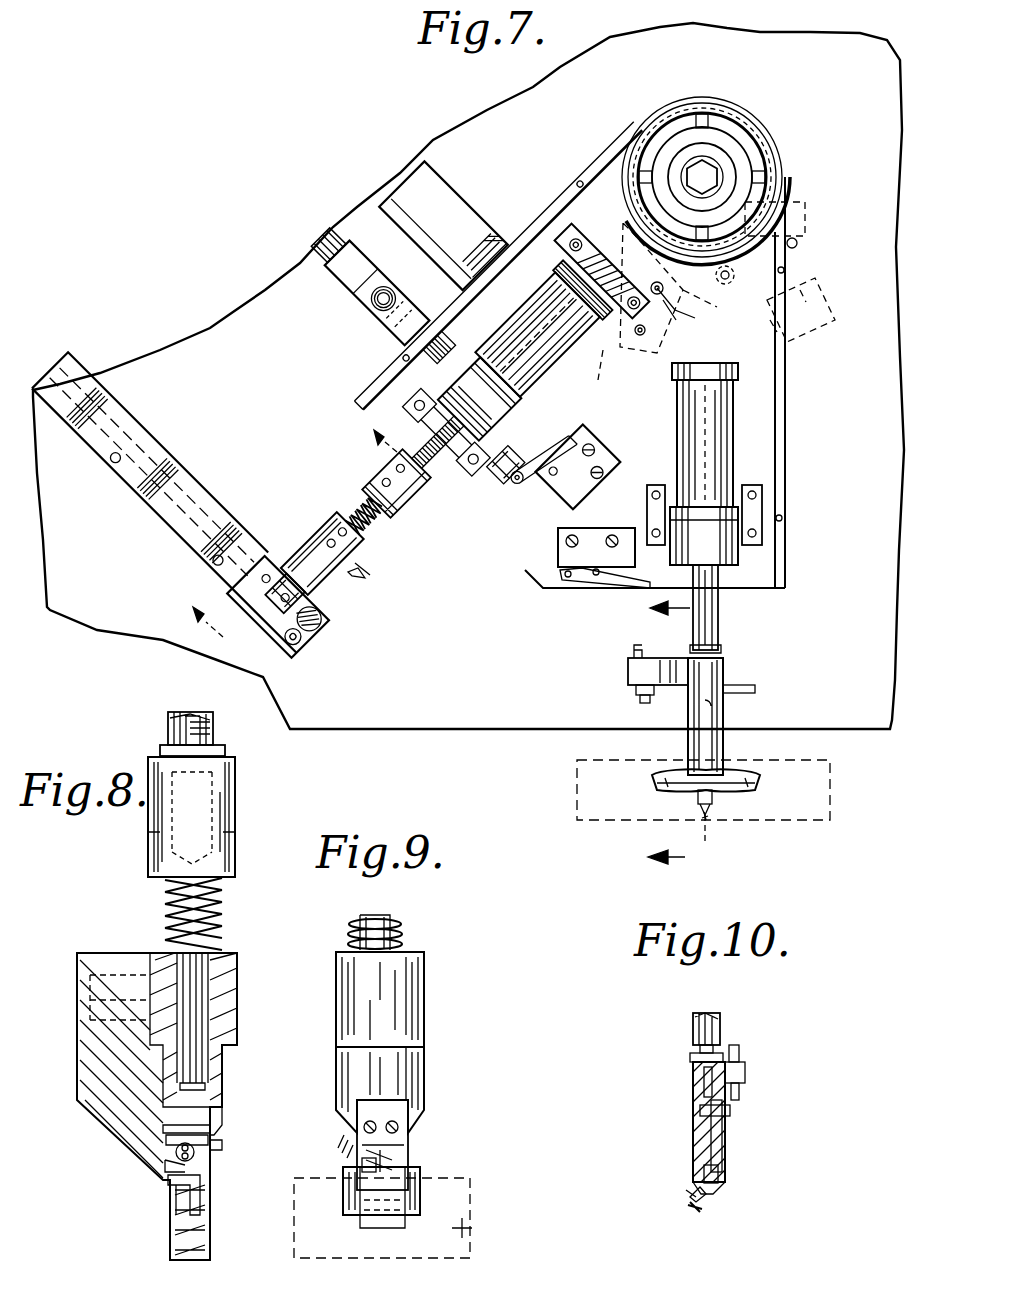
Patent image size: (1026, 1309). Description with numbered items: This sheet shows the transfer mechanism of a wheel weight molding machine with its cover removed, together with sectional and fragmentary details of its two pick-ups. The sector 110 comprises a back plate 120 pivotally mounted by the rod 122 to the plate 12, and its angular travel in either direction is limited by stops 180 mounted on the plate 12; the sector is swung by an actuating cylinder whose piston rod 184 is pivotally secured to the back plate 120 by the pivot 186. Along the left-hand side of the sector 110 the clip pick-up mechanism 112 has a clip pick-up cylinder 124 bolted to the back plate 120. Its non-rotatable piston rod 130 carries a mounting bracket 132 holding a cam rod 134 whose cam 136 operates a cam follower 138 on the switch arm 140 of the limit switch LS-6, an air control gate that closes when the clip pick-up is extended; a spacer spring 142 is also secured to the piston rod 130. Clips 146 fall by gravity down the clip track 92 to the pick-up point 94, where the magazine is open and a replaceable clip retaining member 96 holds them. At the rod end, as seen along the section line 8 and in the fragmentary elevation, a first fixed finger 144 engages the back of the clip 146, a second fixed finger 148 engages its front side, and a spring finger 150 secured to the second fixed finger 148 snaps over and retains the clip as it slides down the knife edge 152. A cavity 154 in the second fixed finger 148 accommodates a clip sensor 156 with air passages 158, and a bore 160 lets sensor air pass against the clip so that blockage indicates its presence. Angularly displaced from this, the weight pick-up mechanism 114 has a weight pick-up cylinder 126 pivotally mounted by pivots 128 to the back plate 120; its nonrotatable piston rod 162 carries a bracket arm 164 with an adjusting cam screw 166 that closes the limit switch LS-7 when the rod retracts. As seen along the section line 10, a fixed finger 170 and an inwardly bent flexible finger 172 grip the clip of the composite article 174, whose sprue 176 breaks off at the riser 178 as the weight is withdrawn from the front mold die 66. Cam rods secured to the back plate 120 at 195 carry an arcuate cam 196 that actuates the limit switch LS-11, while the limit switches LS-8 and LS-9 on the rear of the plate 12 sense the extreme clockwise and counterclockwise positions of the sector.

In FIG. 7, the plate 12 is at (200, 360).
In FIG. 7, the supply magazine or clip track 92 is at (150, 470).
In FIG. 7, the pick-up point 94 is at (300, 605).
In FIG. 7, the clip retaining member 96 is at (292, 650).
In FIG. 7, the clip pick-up mechanism 112 is at (338, 585).
In FIG. 9, the clip pick-up mechanism 112 is at (440, 1090).
In FIG. 7, the clips 146 is at (275, 588).
In FIG. 8, the clips 146 is at (168, 1200).
In FIG. 9, the clips 146 is at (422, 1196).
In FIG. 10, the clips 146 is at (722, 1168).
In FIG. 7, the spacer spring 142 is at (352, 515).
In FIG. 8, the spacer spring 142 is at (222, 912).
In FIG. 9, the spacer spring 142 is at (400, 928).
In FIG. 7, the mounting bracket 132 is at (405, 512).
In FIG. 7, the cam rod 134 is at (480, 510).
In FIG. 7, the cam 136 is at (508, 460).
In FIG. 7, the cam follower 138 is at (515, 490).
In FIG. 7, the switch arm 140 is at (555, 445).
In FIG. 7, the clip pick-up cylinder 124 is at (535, 335).
In FIG. 7, the piston rod 130 is at (375, 400).
In FIG. 7, the stops 180 is at (455, 228).
In FIG. 7, the pivot 186 is at (372, 310).
In FIG. 7, the piston rod 184 is at (318, 250).
In FIG. 7, the limit switch LS-8 is at (641, 308).
In FIG. 7, the limit switch LS-6 is at (600, 438).
In FIG. 7, the limit switch LS-7 is at (632, 533).
In FIG. 7, the limit switch LS-9 is at (822, 338).
In FIG. 7, the limit switch LS-11 is at (805, 222).
In FIG. 7, the back plate 120 is at (615, 185).
In FIG. 7, the rod 122 is at (710, 176).
In FIG. 7, the arcuate cam 196 is at (707, 300).
In FIG. 7, the cam rod mounting 195 is at (660, 320).
In FIG. 7, the weight pick-up cylinder 126 is at (705, 420).
In FIG. 7, the pivots 128 is at (700, 515).
In FIG. 7, the sector 110 is at (830, 496).
In FIG. 7, the piston rod 162 is at (712, 625).
In FIG. 10, the piston rod 162 is at (692, 1028).
In FIG. 7, the fixed finger 170 is at (724, 664).
In FIG. 10, the fixed finger 170 is at (693, 1103).
In FIG. 7, the weight pick-up mechanism 114 is at (740, 715).
In FIG. 10, the weight pick-up mechanism 114 is at (738, 1117).
In FIG. 7, the adjusting cam screw 166 is at (634, 653).
In FIG. 10, the adjusting cam screw 166 is at (740, 1055).
In FIG. 7, the bracket arm 164 is at (662, 690).
In FIG. 10, the bracket arm 164 is at (745, 1070).
In FIG. 7, the composite article 174 is at (752, 790).
In FIG. 10, the composite article 174 is at (708, 1190).
In FIG. 7, the sprue 176 is at (690, 795).
In FIG. 10, the sprue 176 is at (688, 1197).
In FIG. 7, the riser 178 is at (708, 818).
In FIG. 10, the riser 178 is at (690, 1207).
In FIG. 7, the front mold die 66 is at (830, 818).
In FIG. 7, the section line 8— 8 is at (295, 541).
In FIG. 7, the section line 10— 10 is at (668, 734).
In FIG. 8, the first fixed finger 144 is at (163, 1175).
In FIG. 9, the first fixed finger 144 is at (412, 1065).
In FIG. 8, the knife edge 152 is at (172, 1248).
In FIG. 9, the knife edge 152 is at (470, 1228).
In FIG. 8, the clip sensor 156 is at (218, 1120).
In FIG. 8, the cavity 154 is at (165, 1138).
In FIG. 9, the cavity 154 is at (410, 1140).
In FIG. 8, the second fixed finger 148 is at (210, 1145).
In FIG. 8, the spring finger 150 is at (196, 1156).
In FIG. 9, the spring finger 150 is at (395, 1158).
In FIG. 8, the bore 160 is at (160, 1163).
In FIG. 9, the bore 160 is at (398, 1168).
In FIG. 9, the air passages 158 is at (345, 1140).
In FIG. 10, the flexible finger 172 is at (724, 1140).